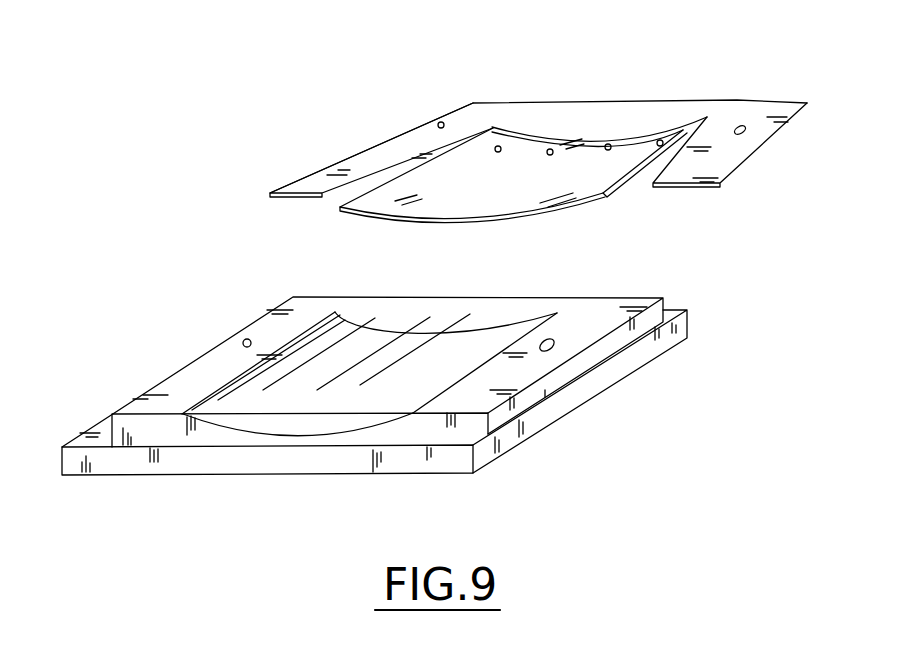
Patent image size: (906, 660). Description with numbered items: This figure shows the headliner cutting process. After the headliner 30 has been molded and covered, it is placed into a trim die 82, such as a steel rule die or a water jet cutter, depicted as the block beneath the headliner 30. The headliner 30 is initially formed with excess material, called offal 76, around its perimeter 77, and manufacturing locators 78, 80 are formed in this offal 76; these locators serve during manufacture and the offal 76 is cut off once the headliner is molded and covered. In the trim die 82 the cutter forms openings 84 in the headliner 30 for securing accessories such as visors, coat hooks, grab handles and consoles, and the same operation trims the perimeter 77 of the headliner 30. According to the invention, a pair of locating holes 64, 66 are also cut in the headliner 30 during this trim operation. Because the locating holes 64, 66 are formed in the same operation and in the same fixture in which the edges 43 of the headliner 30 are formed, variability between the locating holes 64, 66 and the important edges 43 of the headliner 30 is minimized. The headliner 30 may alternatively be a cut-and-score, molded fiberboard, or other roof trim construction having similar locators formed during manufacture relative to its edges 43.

The headliner 30 is at (563, 208).
The edges of the headliner 43 is at (620, 186).
The locating hole 64 is at (611, 144).
The locating hole 66 is at (496, 209).
The offal 76 is at (378, 167).
The perimeter of the headliner 77 is at (368, 209).
The manufacturing locator 78 is at (457, 115).
The manufacturing locator 80 is at (747, 132).
The trim die 82 is at (576, 410).
The openings 84 is at (500, 152).